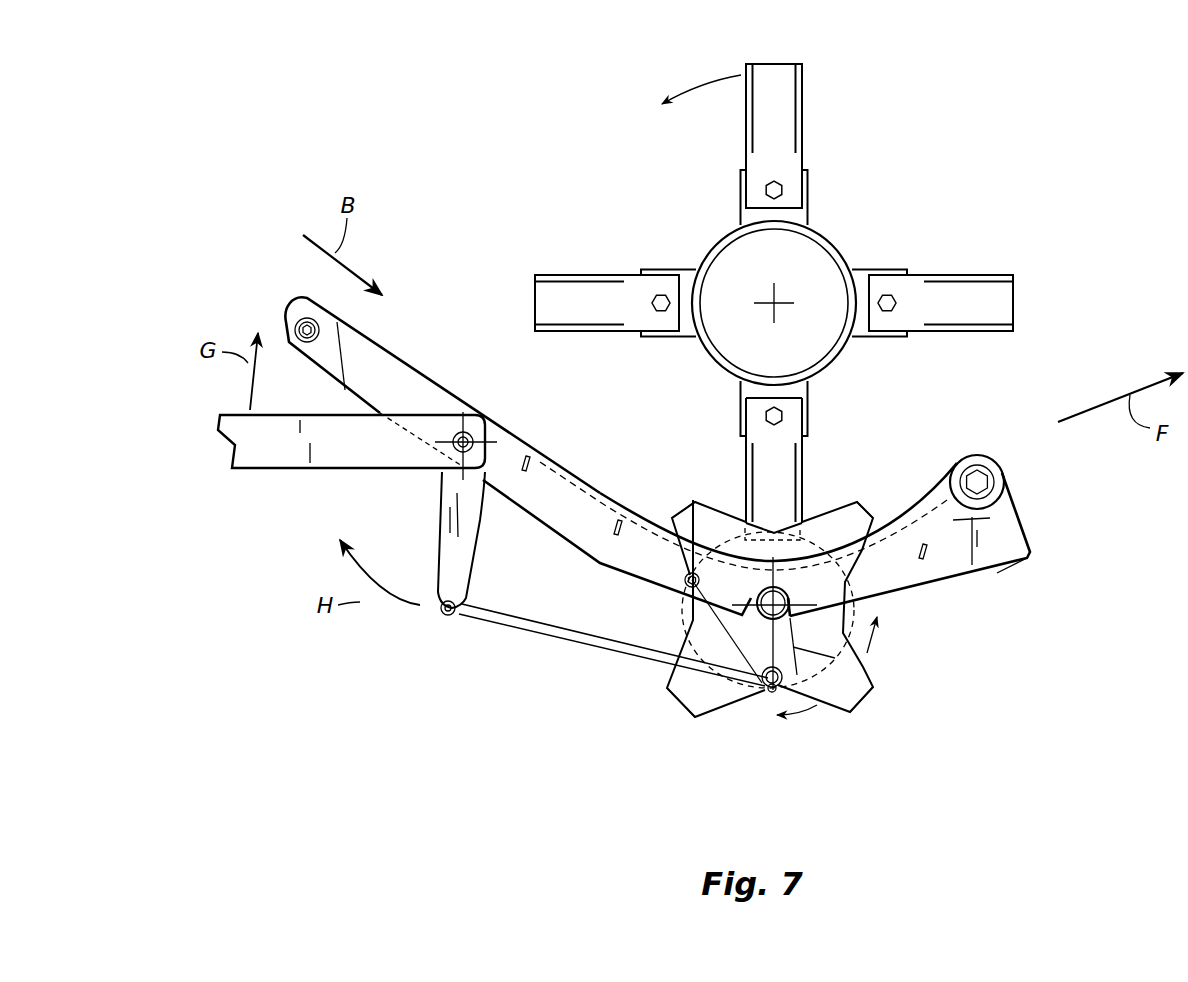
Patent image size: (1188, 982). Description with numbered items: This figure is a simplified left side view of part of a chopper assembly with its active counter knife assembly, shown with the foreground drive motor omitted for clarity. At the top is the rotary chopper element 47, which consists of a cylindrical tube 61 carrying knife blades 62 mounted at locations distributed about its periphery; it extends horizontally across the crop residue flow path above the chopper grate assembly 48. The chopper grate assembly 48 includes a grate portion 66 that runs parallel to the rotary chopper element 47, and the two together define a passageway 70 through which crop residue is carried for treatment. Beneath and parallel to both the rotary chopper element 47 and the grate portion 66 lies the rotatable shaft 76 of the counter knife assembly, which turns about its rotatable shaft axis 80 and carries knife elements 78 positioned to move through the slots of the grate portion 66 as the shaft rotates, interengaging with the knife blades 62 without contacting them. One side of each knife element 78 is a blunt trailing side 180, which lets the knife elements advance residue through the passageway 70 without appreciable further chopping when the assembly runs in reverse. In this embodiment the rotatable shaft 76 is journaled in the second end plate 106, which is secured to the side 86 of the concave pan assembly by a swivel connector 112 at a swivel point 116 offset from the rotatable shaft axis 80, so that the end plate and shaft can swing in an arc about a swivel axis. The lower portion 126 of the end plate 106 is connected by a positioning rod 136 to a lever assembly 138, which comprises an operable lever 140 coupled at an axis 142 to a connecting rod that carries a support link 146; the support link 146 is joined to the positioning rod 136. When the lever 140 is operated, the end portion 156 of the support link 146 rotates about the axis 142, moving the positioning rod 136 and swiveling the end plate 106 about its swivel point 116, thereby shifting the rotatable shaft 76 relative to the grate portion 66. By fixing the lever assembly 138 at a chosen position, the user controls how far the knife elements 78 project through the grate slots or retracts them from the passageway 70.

The rotary chopper element 47 is at (727, 233).
The chopper grate assembly 48 is at (433, 377).
The cylindrical tube 61 is at (834, 247).
The knife blades 62 is at (803, 87).
The grate portion 66 is at (990, 518).
The passageway 70 is at (777, 582).
The rotatable shaft 76 is at (818, 602).
The knife elements 78 is at (668, 515).
The rotatable shaft axis 80 is at (796, 600).
The opposed side of concave pan assembly 86 is at (997, 573).
The second end plate 106 is at (835, 658).
The swivel connectors 112 is at (687, 587).
The swivel point 116 is at (697, 500).
The lower portion of end plate 126 is at (795, 680).
The positioning rod 136 is at (560, 642).
The lever assembly 138 is at (240, 405).
The operable lever 140 is at (262, 470).
The axis 142 is at (480, 420).
The support link 146 is at (473, 563).
The end portion of support link 156 is at (430, 592).
The trailing side 180 is at (724, 465).